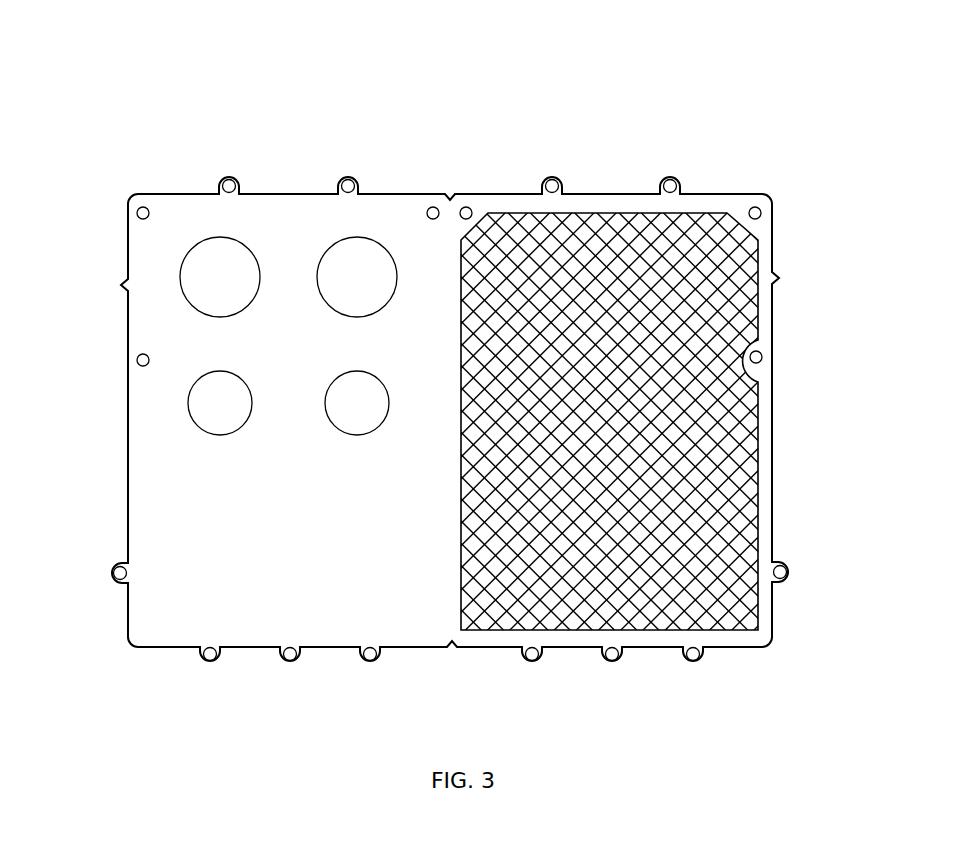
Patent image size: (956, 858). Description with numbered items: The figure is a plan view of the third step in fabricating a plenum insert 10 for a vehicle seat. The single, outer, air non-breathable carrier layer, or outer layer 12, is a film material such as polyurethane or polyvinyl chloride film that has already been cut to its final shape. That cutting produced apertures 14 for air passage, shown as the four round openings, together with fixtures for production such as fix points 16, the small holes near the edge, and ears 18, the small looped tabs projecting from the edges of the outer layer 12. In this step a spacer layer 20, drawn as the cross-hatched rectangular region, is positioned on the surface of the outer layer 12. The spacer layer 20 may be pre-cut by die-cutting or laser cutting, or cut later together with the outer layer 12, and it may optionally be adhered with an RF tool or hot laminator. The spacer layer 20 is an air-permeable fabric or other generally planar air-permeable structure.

The plenum insert 10 is at (685, 113).
The outer layer 12 is at (285, 240).
The apertures 14 is at (226, 238).
The fix points 16 is at (139, 218).
The ears 18 is at (231, 176).
The spacer layer 20 is at (569, 236).